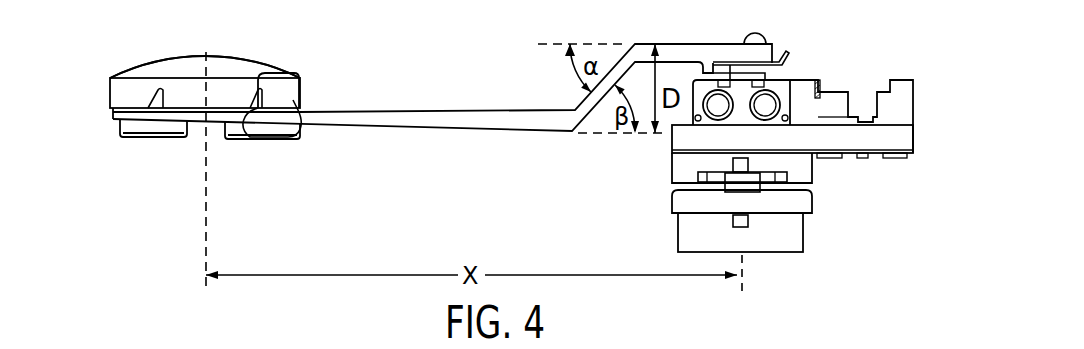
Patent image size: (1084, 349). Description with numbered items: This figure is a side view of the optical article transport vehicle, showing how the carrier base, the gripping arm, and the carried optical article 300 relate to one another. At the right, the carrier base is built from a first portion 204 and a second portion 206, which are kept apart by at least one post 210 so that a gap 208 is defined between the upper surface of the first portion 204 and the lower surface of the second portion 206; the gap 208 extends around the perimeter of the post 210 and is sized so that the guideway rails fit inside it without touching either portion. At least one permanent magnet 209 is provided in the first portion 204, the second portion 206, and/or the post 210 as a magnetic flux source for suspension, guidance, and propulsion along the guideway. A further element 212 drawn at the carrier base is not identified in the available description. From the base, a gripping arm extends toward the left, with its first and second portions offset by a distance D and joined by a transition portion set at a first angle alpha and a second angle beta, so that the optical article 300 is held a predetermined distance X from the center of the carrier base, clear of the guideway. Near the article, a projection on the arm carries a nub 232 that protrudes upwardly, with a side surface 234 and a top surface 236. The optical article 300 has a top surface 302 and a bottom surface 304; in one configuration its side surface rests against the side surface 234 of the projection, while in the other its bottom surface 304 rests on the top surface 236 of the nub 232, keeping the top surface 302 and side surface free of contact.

The optical article 300 is at (229, 48).
The top surface 302 is at (177, 58).
The bottom surface 304 is at (113, 110).
The side surface 234 is at (292, 74).
The top surface 236 is at (258, 137).
The nub 232 is at (298, 105).
The switch 212 is at (892, 141).
The second portion 206 is at (687, 163).
The permanent magnet 209 is at (748, 165).
The gap 208 is at (785, 187).
The post 210 is at (747, 185).
The first portion 204 is at (698, 233).